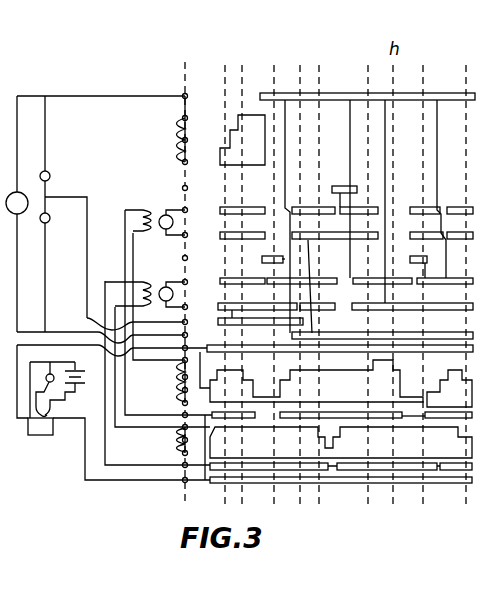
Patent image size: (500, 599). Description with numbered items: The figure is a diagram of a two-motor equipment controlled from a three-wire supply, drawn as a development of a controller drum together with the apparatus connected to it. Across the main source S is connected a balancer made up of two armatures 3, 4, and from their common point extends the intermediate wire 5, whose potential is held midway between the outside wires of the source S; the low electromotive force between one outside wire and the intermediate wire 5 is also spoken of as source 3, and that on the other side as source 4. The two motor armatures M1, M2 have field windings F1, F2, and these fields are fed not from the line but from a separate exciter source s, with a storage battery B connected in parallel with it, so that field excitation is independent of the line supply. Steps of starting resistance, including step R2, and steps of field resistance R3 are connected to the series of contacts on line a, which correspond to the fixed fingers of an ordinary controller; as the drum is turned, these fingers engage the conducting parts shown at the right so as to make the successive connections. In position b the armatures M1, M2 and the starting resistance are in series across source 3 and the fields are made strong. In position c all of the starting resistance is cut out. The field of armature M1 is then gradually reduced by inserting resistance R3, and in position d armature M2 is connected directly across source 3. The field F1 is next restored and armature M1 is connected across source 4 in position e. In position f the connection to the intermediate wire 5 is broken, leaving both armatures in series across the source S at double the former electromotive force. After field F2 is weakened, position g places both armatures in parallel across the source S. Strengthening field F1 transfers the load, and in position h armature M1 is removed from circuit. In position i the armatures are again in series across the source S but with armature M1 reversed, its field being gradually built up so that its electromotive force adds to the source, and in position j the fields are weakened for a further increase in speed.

The balancer armature 3 is at (49, 154).
The balancer armature 4 is at (49, 272).
The intermediate wire 5 is at (71, 257).
The source of electrical energy S is at (17, 214).
The field winding F1 is at (138, 212).
The motor armature M1 is at (172, 214).
The field winding F2 is at (128, 285).
The motor armature M2 is at (172, 286).
The source of electrical energy s is at (43, 382).
The storage battery B is at (71, 382).
The controller position h is at (45, 423).
The starting resistance step R2 is at (169, 381).
The field resistance steps R3 is at (169, 442).
The line of contacts a is at (185, 272).
The controller position b is at (225, 272).
The controller position c is at (243, 273).
The controller position d is at (274, 272).
The controller position e is at (301, 273).
The controller position f is at (320, 273).
The controller position g is at (367, 273).
The controller position i is at (423, 272).
The controller position j is at (462, 273).